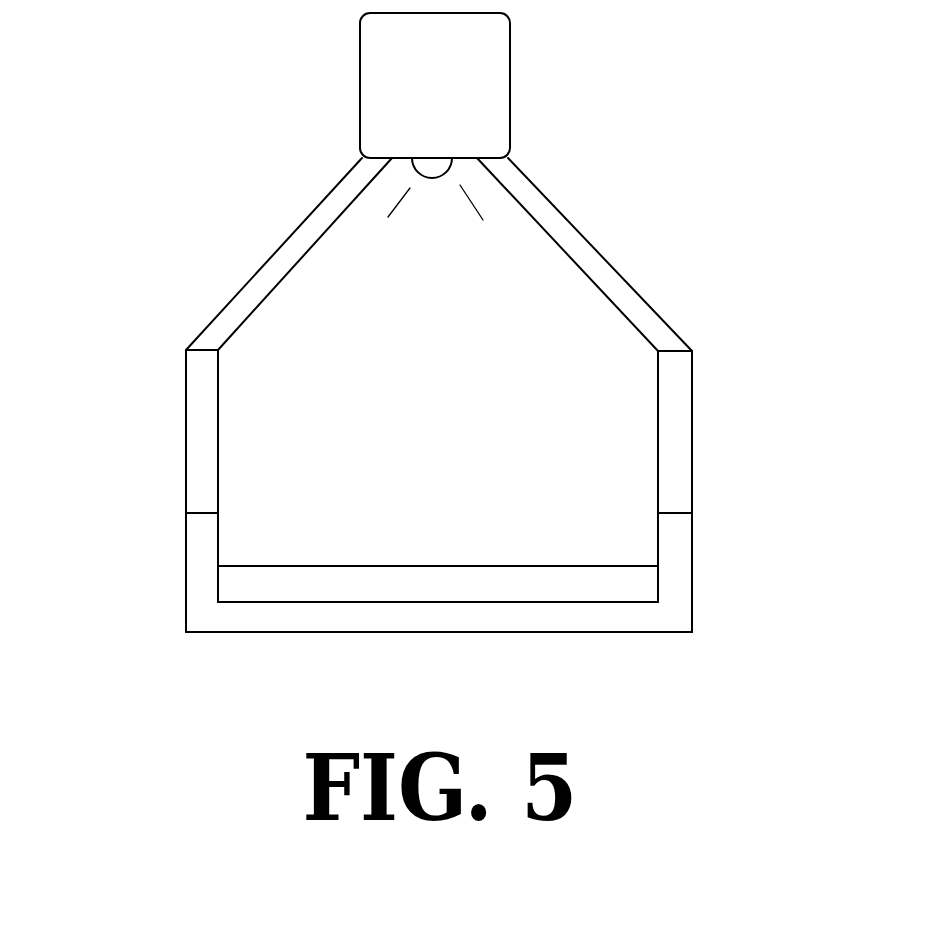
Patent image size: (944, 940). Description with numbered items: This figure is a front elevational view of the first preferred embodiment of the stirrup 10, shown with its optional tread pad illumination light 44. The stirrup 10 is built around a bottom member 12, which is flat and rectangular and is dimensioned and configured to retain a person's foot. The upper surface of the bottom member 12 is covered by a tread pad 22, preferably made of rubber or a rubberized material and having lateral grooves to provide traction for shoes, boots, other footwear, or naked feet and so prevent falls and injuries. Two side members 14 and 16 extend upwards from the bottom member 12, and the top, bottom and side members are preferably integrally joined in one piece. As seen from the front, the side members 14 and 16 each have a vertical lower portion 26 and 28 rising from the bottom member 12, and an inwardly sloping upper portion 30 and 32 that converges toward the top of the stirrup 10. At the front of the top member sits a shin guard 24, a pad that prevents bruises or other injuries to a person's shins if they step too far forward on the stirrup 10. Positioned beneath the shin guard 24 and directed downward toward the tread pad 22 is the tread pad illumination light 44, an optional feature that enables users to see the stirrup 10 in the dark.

The stirrup 10 is at (691, 632).
The bottom member 12 is at (417, 632).
The side member 14 is at (186, 350).
The side member 16 is at (692, 351).
The tread pad 22 is at (432, 567).
The shin guard 24 is at (362, 82).
The vertical lower portion 26 is at (185, 428).
The vertical lower portion 28 is at (692, 421).
The inwardly sloping upper portion 30 is at (270, 255).
The inwardly sloping upper portion 32 is at (603, 255).
The tread pad illumination light 44 is at (432, 157).